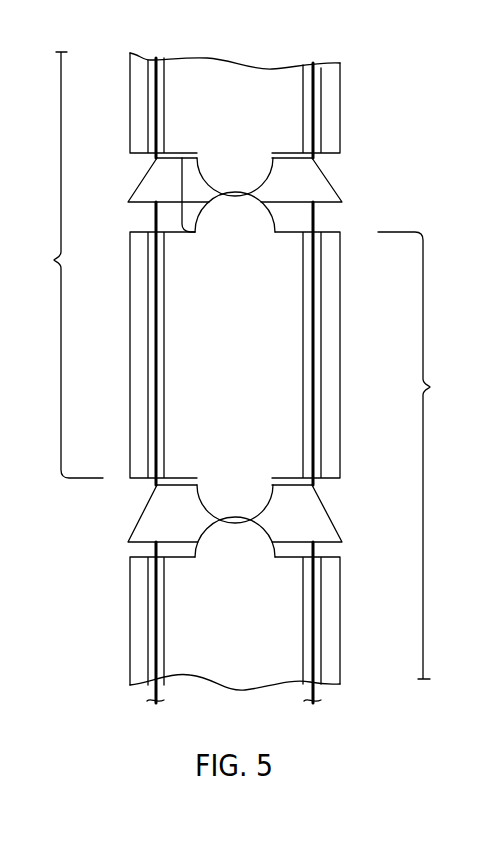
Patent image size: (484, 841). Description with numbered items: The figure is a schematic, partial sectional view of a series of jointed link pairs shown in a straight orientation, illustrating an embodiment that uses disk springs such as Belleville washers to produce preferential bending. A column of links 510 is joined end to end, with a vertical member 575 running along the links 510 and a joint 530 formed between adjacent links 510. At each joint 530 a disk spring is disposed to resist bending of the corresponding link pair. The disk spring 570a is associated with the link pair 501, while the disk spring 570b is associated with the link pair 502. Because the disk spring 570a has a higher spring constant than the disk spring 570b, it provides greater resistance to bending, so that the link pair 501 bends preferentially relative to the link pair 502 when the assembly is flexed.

The link 510 is at (207, 58).
The vertical frame member 575 is at (148, 73).
The joint 530 is at (182, 201).
The disk spring 570a is at (331, 185).
The disk spring 570b is at (328, 515).
The link pair 501 is at (56, 265).
The link pair 502 is at (425, 455).